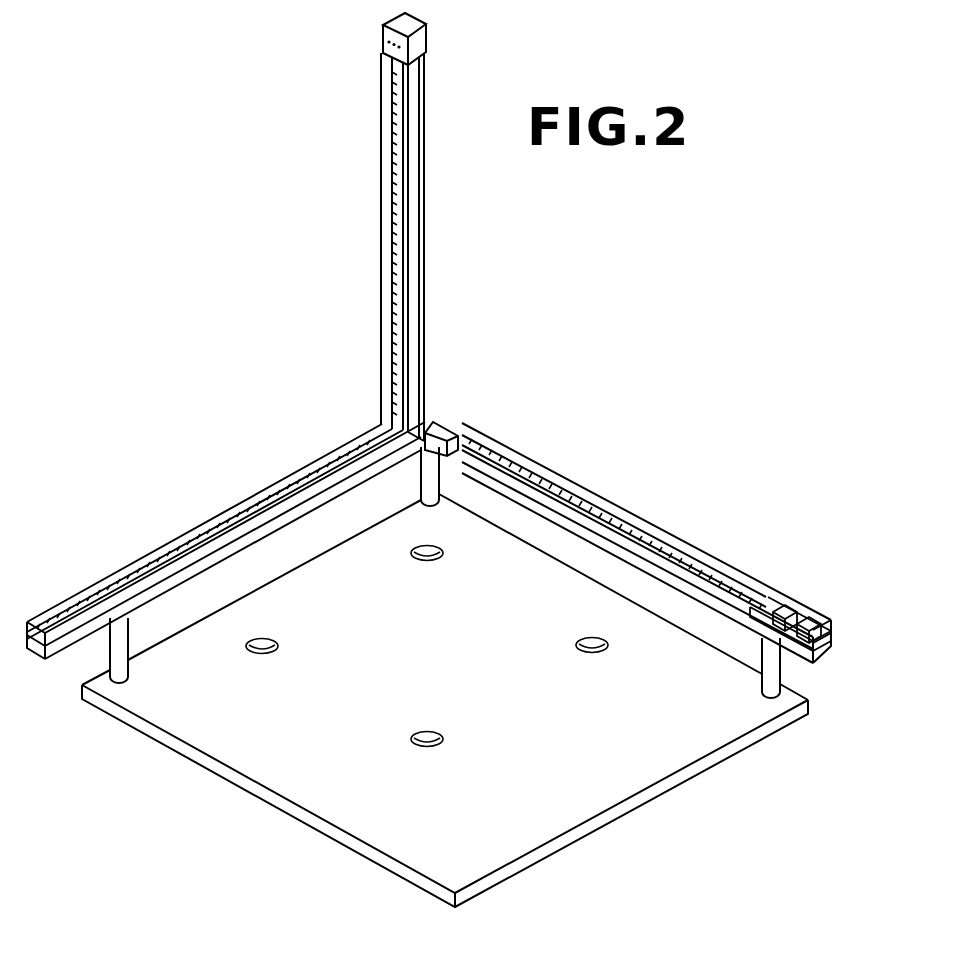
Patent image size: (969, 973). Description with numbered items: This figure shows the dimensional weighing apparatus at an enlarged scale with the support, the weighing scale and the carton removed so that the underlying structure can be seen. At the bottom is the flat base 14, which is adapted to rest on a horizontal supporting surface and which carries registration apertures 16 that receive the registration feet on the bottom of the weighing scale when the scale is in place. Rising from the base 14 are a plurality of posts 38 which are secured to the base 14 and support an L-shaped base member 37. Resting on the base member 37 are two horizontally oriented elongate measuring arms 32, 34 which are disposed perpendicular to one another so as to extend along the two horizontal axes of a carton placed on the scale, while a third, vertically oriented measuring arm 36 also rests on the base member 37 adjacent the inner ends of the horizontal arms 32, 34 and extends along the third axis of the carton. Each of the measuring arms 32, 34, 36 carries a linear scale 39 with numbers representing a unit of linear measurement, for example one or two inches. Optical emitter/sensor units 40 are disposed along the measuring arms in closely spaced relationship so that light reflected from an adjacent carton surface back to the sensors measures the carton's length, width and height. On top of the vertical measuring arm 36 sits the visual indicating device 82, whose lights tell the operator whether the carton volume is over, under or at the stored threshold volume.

The base 14 is at (655, 763).
The registration apertures 16 is at (443, 742).
The measuring arm 32 is at (684, 542).
The measuring arm 34 is at (232, 512).
The measuring arm 36 is at (425, 236).
The L-shaped base member 37 is at (437, 433).
The posts 38 is at (421, 478).
The linear scale 39 is at (396, 178).
The emitter/sensor units 40 is at (806, 588).
The visual indicating device 82 is at (418, 40).